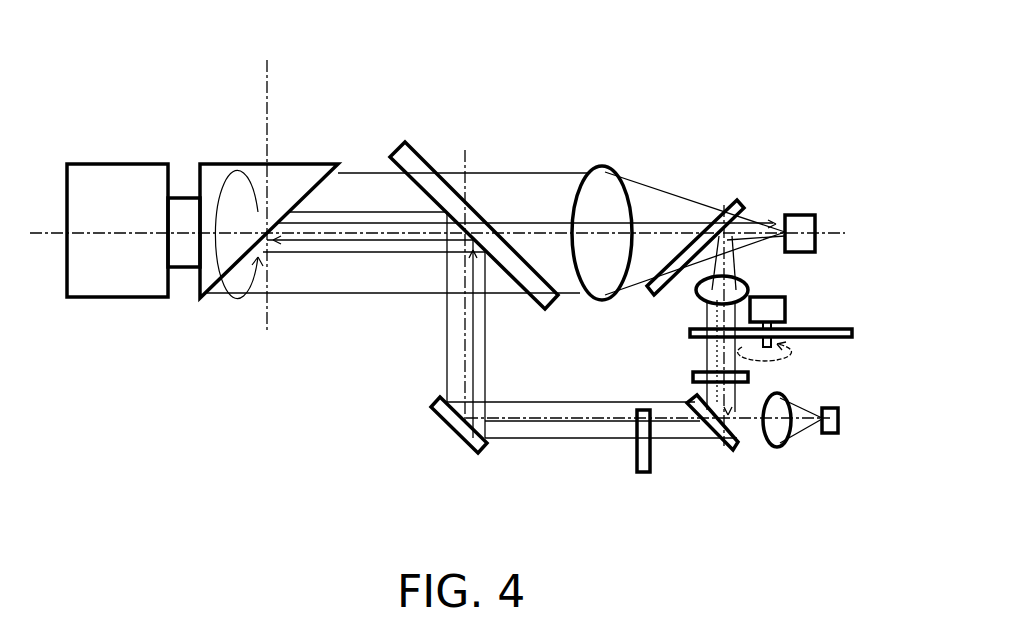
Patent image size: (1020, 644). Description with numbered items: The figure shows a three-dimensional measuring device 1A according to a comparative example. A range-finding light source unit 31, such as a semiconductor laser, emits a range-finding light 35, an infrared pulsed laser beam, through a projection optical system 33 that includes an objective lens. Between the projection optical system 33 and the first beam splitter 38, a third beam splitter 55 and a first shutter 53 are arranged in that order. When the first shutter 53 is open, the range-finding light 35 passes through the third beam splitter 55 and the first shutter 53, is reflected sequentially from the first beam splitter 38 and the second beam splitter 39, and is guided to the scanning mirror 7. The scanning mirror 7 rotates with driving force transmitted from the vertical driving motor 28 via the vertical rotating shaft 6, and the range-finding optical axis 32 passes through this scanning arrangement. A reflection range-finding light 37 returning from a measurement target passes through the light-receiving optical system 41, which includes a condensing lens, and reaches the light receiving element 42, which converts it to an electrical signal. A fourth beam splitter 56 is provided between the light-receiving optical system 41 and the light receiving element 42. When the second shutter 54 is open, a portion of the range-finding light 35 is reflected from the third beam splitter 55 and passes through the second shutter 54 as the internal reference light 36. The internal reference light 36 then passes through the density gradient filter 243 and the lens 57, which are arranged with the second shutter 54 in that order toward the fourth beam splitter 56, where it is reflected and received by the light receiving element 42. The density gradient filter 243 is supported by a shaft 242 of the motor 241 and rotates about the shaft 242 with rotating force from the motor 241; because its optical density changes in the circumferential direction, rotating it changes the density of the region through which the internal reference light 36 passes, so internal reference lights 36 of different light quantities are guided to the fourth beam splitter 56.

The 3-dimensional measuring device 1A is at (562, 93).
The vertical driving motor 28 is at (118, 163).
The vertical rotating shaft 6 is at (183, 197).
The scanning mirror 7 is at (297, 163).
The range-finding optical axis 32 is at (270, 90).
The second beam splitter 39 is at (425, 152).
The light-receiving optical system 41 is at (628, 165).
The reflection range-finding light 37 is at (663, 220).
The fourth beam splitter 56 is at (740, 200).
The internal reference light 36 is at (733, 223).
The light receiving element 42 is at (818, 225).
The lens 57 is at (750, 290).
The motor 241 is at (790, 308).
The density gradient filter 243 is at (825, 340).
The shaft 242 is at (775, 347).
The second shutter 54 is at (690, 378).
The first beam splitter 38 is at (462, 440).
The range-finding light 35 is at (553, 423).
The first shutter 53 is at (643, 480).
The third beam splitter 55 is at (727, 449).
The projection optical system 33 is at (785, 447).
The range-finding light source unit 31 is at (830, 435).